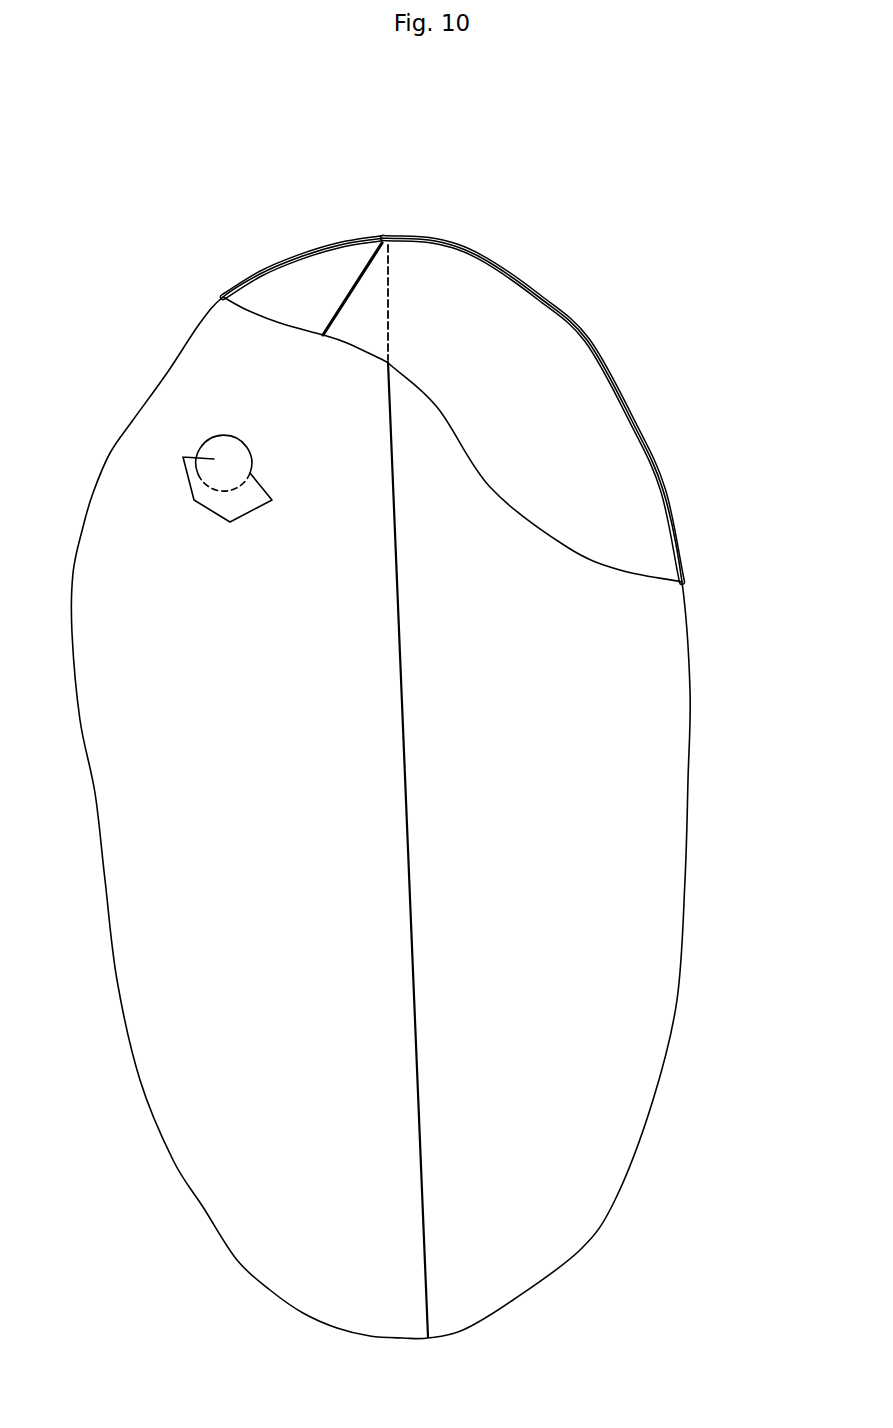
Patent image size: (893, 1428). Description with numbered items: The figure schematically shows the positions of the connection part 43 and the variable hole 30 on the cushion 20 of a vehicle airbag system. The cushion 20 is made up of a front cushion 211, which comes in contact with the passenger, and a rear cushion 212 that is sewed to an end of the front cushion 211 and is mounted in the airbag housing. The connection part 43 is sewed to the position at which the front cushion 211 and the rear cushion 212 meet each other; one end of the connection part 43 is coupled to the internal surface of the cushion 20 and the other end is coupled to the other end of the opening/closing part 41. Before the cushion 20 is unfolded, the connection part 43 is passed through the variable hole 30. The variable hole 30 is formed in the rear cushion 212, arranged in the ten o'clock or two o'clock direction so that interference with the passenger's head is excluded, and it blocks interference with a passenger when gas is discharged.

The cushion 20 is at (667, 476).
The front cushion 211 is at (435, 237).
The rear cushion 212 is at (333, 237).
The connection part 43 is at (343, 315).
The opening/closing part 41 is at (183, 477).
The variable hole 30 is at (211, 489).